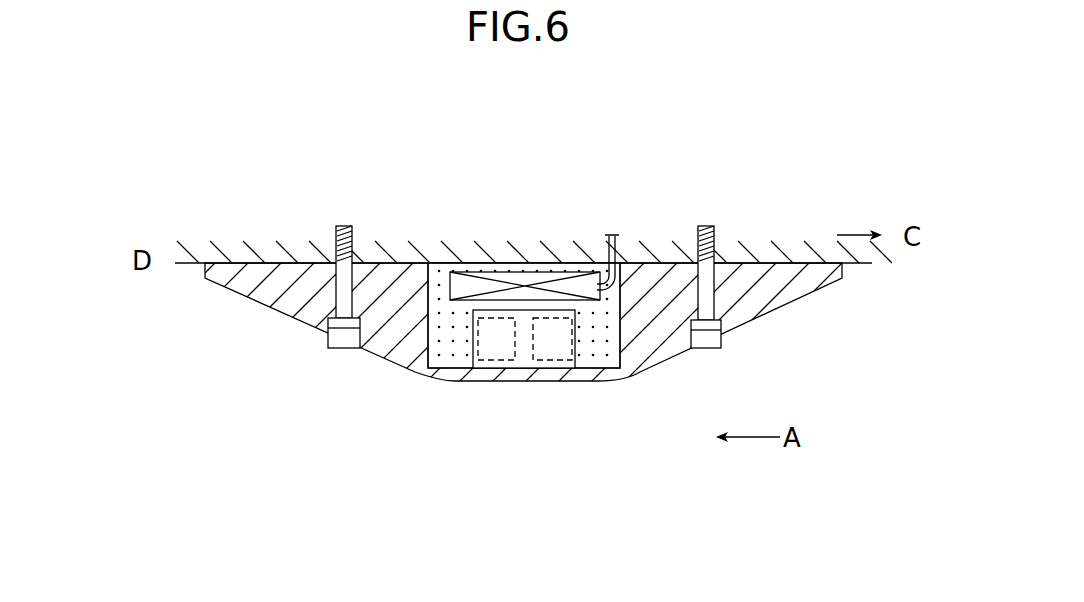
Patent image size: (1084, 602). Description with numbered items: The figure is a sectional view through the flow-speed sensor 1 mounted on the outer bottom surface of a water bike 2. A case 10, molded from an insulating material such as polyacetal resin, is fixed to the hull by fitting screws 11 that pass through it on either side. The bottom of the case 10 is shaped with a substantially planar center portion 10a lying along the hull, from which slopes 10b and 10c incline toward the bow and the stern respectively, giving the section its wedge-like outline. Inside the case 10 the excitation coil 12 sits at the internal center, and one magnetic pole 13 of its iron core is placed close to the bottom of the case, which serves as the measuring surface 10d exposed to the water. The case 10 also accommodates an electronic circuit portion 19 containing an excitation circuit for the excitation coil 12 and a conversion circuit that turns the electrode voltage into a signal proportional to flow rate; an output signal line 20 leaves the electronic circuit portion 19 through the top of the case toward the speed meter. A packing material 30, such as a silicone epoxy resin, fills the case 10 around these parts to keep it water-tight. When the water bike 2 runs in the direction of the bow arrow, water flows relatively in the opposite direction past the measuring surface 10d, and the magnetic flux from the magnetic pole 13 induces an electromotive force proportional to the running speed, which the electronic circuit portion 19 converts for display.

The sensor device 1 is at (405, 393).
The water bike 2 is at (793, 250).
The case 10 is at (660, 280).
The center portion 10a is at (533, 388).
The slope 10b is at (767, 312).
The slope 10c is at (278, 310).
The measuring surface 10d is at (493, 381).
The fitting screws 11 is at (341, 226).
The excitation coil 12 is at (603, 375).
The magnetic pole 13 is at (531, 383).
The electronic circuit portion 19 is at (493, 262).
The output signal line 20 is at (607, 240).
The packing material 30 is at (447, 373).